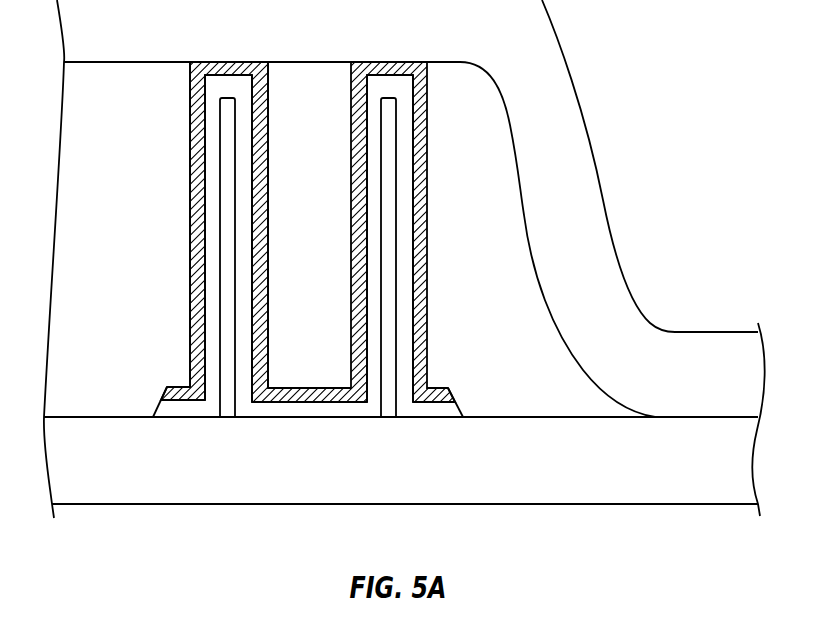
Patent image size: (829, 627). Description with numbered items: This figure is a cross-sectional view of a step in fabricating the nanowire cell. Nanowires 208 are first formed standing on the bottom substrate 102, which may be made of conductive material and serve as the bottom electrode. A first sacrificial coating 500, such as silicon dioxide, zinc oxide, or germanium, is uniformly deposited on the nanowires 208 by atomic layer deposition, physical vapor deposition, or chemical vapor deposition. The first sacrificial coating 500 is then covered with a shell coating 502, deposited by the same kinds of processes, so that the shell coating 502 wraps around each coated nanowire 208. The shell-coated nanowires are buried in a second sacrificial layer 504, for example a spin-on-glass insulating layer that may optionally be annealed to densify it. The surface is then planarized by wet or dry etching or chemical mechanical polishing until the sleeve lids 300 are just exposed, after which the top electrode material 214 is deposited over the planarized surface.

The bottom substrate 102 is at (329, 484).
The top electrode material 214 is at (329, 30).
The sleeve lid 300 is at (220, 62).
The shell coating 502 is at (420, 335).
The nanowire 208 is at (220, 273).
The first sacrificial coating 500 is at (402, 413).
The second sacrificial layer 504 is at (145, 235).